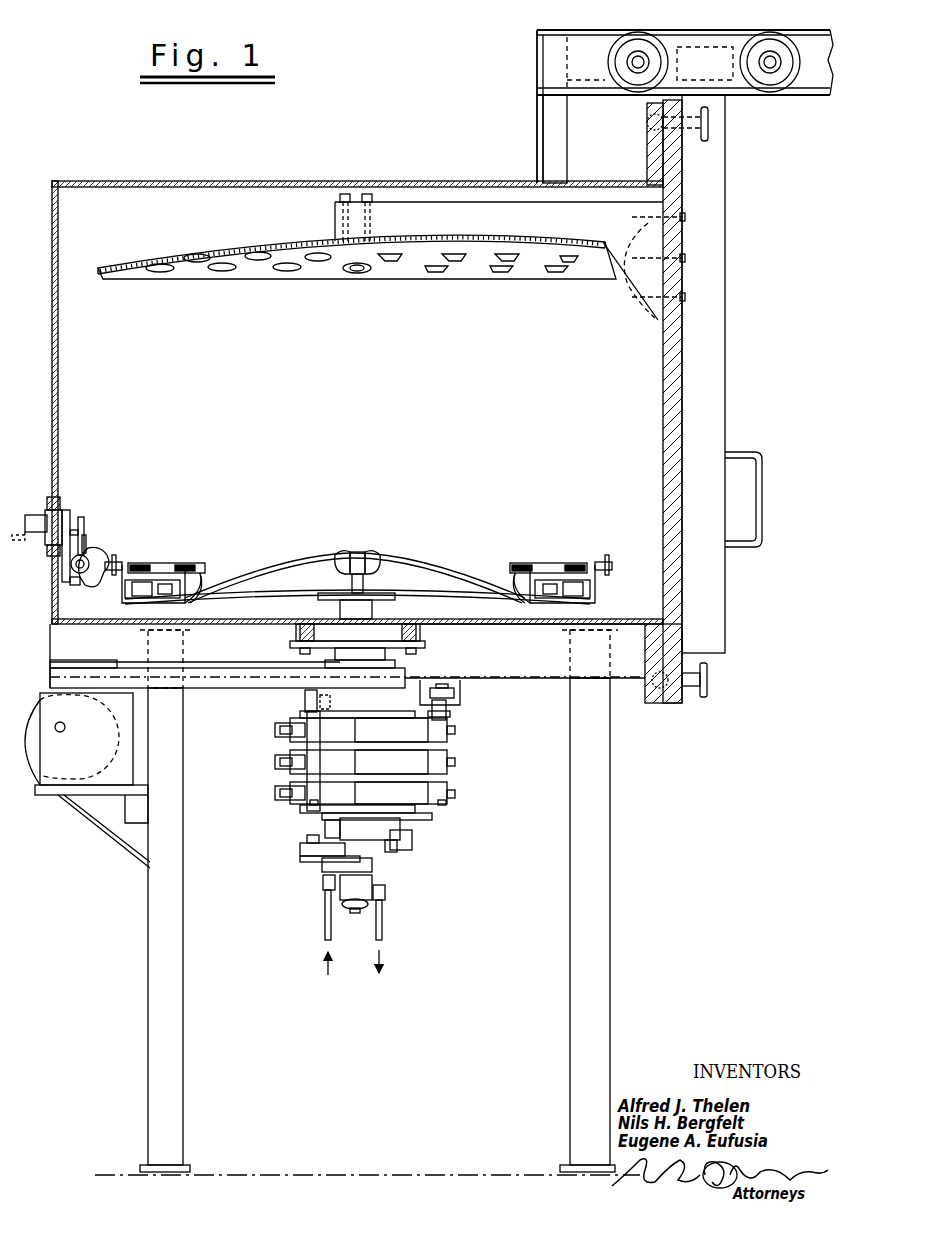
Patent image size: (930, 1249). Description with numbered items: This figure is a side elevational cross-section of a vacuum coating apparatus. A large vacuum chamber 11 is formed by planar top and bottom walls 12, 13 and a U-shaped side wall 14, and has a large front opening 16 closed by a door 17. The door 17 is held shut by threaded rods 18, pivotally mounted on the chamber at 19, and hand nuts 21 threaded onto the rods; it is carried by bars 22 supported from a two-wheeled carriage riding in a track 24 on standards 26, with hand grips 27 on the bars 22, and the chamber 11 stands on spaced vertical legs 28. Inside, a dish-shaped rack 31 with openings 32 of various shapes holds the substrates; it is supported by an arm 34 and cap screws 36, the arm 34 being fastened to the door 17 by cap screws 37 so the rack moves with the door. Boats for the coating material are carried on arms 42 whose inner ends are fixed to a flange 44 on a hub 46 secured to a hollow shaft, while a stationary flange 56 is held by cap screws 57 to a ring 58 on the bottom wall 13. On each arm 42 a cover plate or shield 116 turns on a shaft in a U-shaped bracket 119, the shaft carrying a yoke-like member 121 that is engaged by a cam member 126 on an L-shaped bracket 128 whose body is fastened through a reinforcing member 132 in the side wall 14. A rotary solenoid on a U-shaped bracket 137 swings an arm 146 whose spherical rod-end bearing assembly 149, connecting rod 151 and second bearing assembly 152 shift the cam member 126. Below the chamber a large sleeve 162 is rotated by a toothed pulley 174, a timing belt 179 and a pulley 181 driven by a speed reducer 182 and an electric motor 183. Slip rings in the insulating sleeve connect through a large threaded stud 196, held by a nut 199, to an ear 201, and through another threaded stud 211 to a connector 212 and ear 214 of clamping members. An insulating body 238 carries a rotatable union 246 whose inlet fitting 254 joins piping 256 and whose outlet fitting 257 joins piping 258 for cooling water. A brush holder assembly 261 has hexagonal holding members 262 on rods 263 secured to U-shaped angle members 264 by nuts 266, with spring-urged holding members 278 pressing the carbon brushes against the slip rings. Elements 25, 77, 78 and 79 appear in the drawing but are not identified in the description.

The vacuum chamber 11 is at (375, 138).
The top wall 12 is at (230, 182).
The bottom wall 13 is at (485, 618).
The side wall 14 is at (55, 378).
The front opening 16 is at (662, 612).
The door 17 is at (668, 462).
The threaded rods 18 is at (647, 120).
The pivot mounting 19 is at (646, 150).
The hand nuts 21 is at (710, 130).
The bars 22 is at (726, 262).
The track 24 is at (592, 56).
The carriage wheels 25 is at (710, 46).
The standards 26 is at (545, 140).
The hand grips 27 is at (764, 481).
The vertical legs 28 is at (183, 918).
The rack 31 is at (128, 280).
The openings 32 is at (246, 262).
The arm 34 is at (510, 226).
The cap screws 36 is at (340, 219).
The cap screws 37 is at (648, 306).
The arms 42 is at (275, 595).
The flange 44 is at (318, 604).
The hub 46 is at (372, 608).
The stationary flange 56 is at (298, 648).
The cap screws 57 is at (395, 660).
The ring 58 is at (296, 630).
The curved tray arms 77 is at (212, 584).
The tray plate 78 is at (230, 580).
The hub wing nut 79 is at (342, 567).
The cover plate or shield 116 is at (165, 563).
The U-shaped bracket 119 is at (210, 568).
The yoke-like member 121 is at (112, 578).
The cam member 126 is at (106, 553).
The L-shaped bracket 128 is at (70, 580).
The reinforcing member 132 is at (58, 500).
The U-shaped bracket 137 is at (18, 542).
The arm 146 is at (72, 520).
The spherical rod-end bearing assembly 149 is at (88, 520).
The connecting rod 151 is at (86, 545).
The spherical rod-end bearing assembly 152 is at (76, 574).
The large sleeve 162 is at (395, 715).
The pulley 174 is at (395, 664).
The timing belt 179 is at (252, 680).
The pulley 181 is at (108, 662).
The speed reducer 182 is at (120, 779).
The electric motor 183 is at (35, 795).
The large threaded stud 196 is at (412, 818).
The nut 199 is at (412, 840).
The ear 201 is at (380, 826).
The threaded stud 211 is at (325, 826).
The connector 212 is at (300, 850).
The ear 214 is at (307, 840).
The insulating body 238 is at (354, 913).
The union 246 is at (348, 890).
The fitting 254 is at (323, 882).
The piping 256 is at (325, 922).
The fitting 257 is at (385, 890).
The piping 258 is at (382, 922).
The brush holder assembly 261 is at (480, 769).
The hexagonal holding members 262 is at (408, 766).
The rods 263 is at (310, 806).
The U-shaped angle members 264 is at (305, 696).
The nuts 266 is at (455, 692).
The spring-urged holding member 278 is at (458, 738).